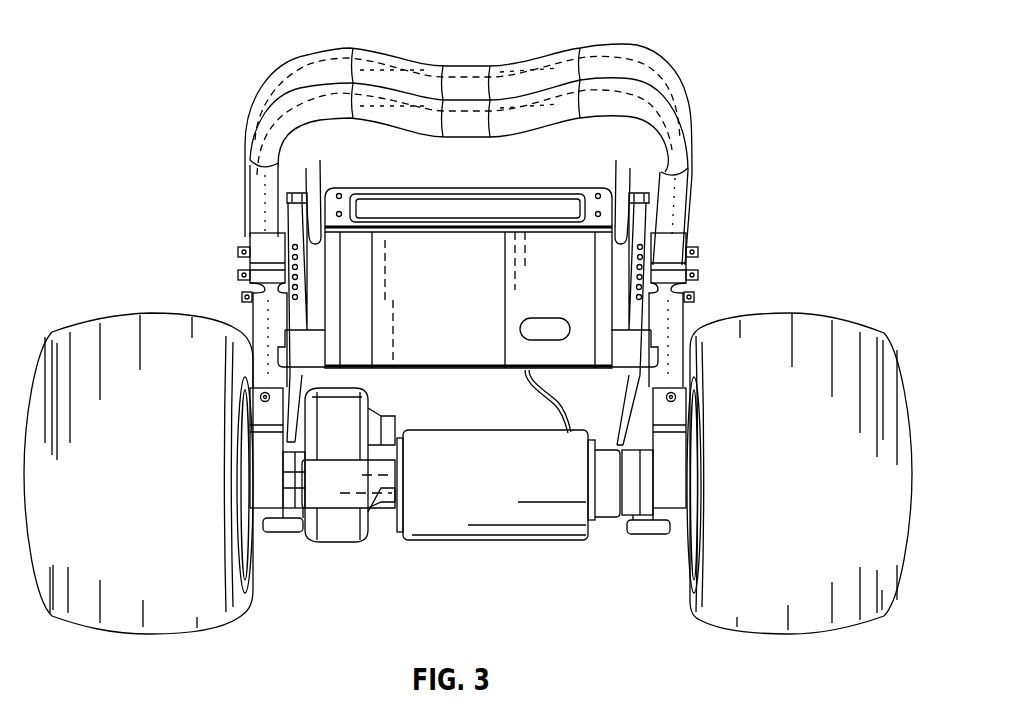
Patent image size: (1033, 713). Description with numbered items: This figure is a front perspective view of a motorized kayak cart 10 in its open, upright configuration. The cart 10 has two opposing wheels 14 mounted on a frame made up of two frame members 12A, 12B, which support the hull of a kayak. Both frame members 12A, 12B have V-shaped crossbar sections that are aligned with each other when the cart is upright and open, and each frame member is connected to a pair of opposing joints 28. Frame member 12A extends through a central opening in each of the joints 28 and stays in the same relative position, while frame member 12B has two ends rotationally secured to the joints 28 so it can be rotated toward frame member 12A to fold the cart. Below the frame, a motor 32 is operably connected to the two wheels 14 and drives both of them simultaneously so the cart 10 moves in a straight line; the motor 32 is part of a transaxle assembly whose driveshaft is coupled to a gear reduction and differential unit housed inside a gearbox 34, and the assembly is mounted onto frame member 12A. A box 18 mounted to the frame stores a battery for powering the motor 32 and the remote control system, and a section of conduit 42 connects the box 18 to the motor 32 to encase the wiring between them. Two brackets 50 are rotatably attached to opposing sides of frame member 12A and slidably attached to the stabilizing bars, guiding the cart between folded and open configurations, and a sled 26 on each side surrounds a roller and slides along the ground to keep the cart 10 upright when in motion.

The motorized kayak cart 10 is at (215, 40).
The frame member 12A is at (643, 53).
The frame member 12B is at (652, 95).
The wheels 14 is at (95, 330).
The box 18 is at (452, 314).
The sled 26 is at (285, 538).
The joints 28 is at (238, 265).
The motor 32 is at (507, 538).
The gearbox 34 is at (348, 540).
The conduit 42 is at (522, 392).
The brackets 50 is at (300, 193).